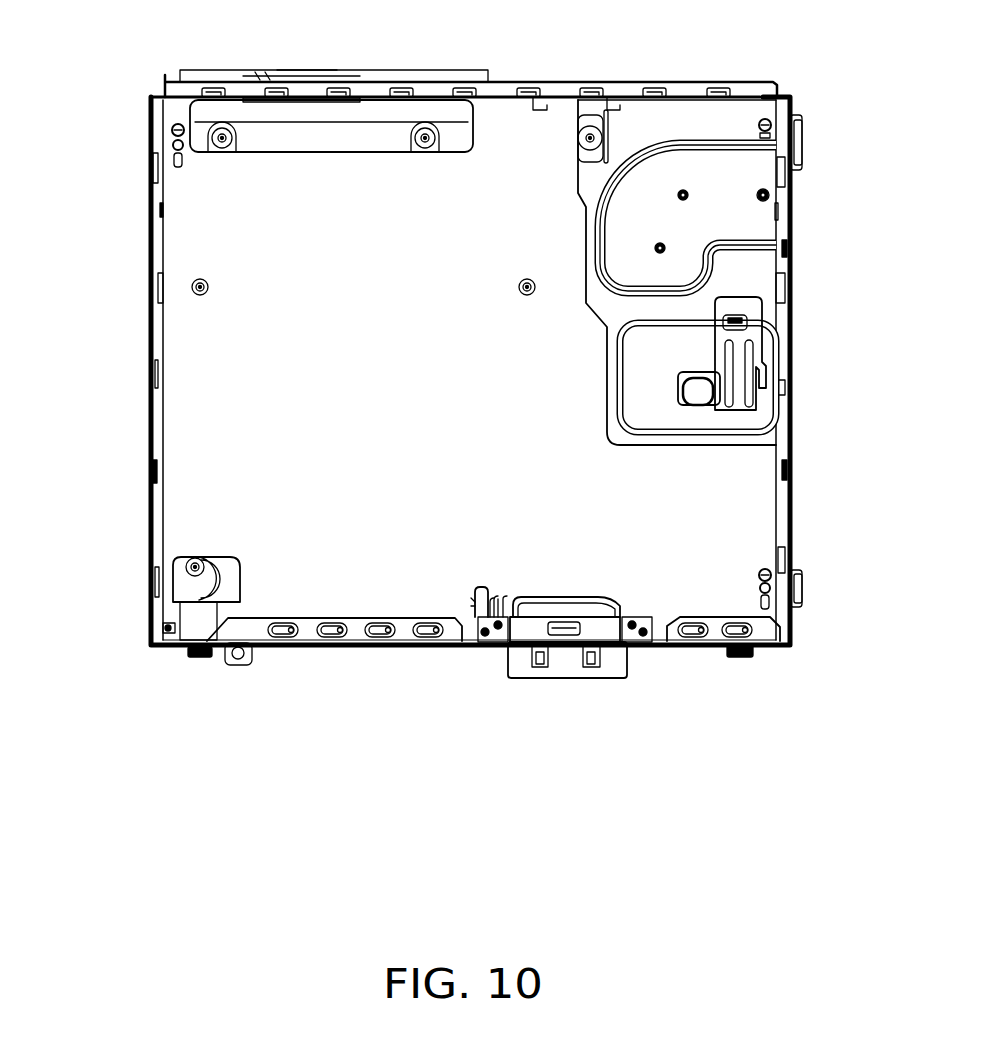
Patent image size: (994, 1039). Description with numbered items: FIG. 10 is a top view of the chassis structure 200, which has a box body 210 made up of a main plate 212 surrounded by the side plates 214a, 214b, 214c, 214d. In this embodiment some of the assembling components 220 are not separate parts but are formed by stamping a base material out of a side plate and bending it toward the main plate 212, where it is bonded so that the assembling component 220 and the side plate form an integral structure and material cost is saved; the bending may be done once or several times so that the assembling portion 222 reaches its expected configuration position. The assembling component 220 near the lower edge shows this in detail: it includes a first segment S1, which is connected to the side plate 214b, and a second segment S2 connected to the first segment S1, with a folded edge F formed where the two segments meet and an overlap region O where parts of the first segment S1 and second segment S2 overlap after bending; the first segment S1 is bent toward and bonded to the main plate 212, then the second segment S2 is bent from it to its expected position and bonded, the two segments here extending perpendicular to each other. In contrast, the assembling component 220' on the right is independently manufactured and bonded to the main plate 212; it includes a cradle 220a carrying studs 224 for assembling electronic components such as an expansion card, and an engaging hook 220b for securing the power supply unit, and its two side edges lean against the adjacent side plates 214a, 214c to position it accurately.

The chassis structure 200 is at (858, 852).
The box body 210 is at (812, 458).
The main plate 212 is at (220, 428).
The side plate 214a is at (555, 82).
The side plate 214b is at (385, 645).
The side plate 214c is at (790, 413).
The side plate 214d is at (150, 338).
The assembling component 220 is at (407, 370).
The assembling component 220' is at (731, 272).
The cradle 220a is at (625, 248).
The engaging hook 220b is at (738, 310).
The assembling portion 222 is at (222, 150).
The stud 224 is at (769, 195).
The first segment S1 is at (480, 586).
The second segment S2 is at (500, 610).
The overlap region O is at (466, 598).
The folded edge F is at (464, 606).